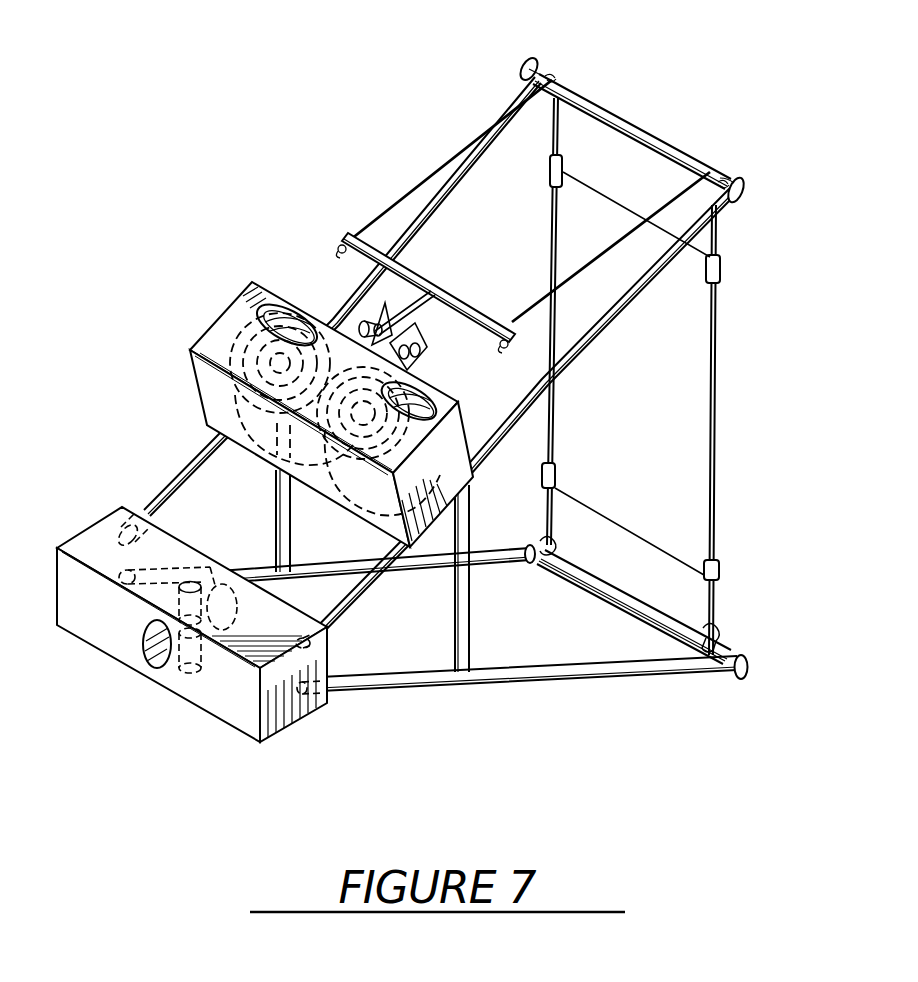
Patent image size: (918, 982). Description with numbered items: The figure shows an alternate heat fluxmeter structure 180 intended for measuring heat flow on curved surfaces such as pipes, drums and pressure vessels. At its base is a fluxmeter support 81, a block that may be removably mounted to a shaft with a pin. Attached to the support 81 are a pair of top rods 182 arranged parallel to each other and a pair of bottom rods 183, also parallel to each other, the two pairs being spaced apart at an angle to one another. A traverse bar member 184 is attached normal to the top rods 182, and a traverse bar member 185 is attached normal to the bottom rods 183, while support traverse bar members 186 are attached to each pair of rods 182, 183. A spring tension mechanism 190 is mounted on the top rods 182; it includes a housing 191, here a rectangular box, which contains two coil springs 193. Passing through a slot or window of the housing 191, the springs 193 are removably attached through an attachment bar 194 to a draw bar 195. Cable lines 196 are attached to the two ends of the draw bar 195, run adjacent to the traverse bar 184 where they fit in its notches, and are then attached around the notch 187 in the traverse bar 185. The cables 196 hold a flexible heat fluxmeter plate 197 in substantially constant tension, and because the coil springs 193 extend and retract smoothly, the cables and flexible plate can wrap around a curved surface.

The fluxmeter support 81 is at (100, 539).
The fluxmeter structure 180 is at (460, 367).
The top rods 182 is at (192, 475).
The bottom rods 183 is at (315, 566).
The traverse bar member 184 is at (632, 122).
The traverse bar member 185 is at (626, 609).
The support traverse bar members 186 is at (550, 74).
The notch 187 is at (540, 541).
The spring tension mechanism 190 is at (290, 399).
The housing 191 is at (290, 414).
The coil springs 193 is at (296, 308).
The attachment bar 194 is at (430, 350).
The draw bar 195 is at (416, 268).
The cable lines 196 is at (412, 190).
The flexible heat fluxmeter plate 197 is at (690, 433).